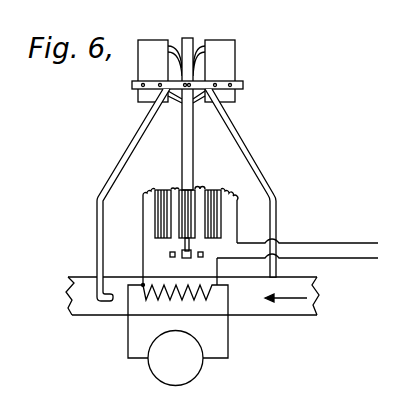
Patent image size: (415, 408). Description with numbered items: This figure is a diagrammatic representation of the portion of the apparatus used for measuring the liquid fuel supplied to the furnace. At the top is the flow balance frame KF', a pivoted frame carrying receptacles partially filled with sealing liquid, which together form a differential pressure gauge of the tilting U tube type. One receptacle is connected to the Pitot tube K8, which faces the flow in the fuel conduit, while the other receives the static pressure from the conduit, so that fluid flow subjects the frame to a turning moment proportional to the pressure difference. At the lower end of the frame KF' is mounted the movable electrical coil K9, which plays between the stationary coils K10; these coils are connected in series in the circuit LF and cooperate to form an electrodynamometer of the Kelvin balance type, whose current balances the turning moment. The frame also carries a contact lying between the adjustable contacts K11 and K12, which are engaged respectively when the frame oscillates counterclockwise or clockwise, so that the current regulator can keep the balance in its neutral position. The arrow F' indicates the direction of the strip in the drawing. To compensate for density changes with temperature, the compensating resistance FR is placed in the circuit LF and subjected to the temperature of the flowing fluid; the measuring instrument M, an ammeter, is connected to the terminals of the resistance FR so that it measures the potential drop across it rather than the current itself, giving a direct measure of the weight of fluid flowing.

The Pitot tube K8 is at (100, 296).
The movable electrical coil K9 is at (180, 218).
The stationary coils K10 is at (213, 190).
The adjustable contact K11 is at (203, 256).
The adjustable contact K12 is at (173, 258).
The flow balance frame KF' is at (201, 114).
The dynamometer circuit LF is at (321, 262).
The compensating resistance FR is at (152, 294).
The direction of motion of strip F' is at (284, 320).
The electrical measuring instrument M is at (175, 358).